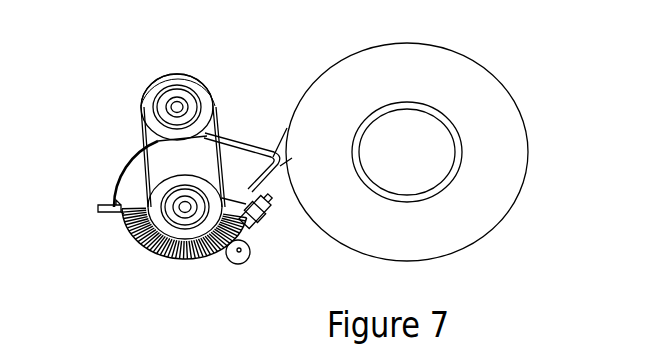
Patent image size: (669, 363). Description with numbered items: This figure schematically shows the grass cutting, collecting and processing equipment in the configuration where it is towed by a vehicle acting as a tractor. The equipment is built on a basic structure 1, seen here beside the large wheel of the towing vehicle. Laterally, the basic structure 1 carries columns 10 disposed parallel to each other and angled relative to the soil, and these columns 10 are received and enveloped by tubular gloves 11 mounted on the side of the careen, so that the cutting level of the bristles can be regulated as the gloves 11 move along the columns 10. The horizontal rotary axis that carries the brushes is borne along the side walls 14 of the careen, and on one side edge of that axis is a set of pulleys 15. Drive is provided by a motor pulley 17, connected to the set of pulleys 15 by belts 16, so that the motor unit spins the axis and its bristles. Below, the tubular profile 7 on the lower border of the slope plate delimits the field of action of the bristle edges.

The basic structure 1 is at (268, 122).
The tubular profile 7 is at (237, 253).
The columns 10 is at (261, 216).
The tubular gloves 11 is at (230, 200).
The side walls 14 is at (133, 185).
The set of pulleys 15 is at (162, 223).
The belts 16 is at (140, 138).
The motor pulley 17 is at (183, 82).